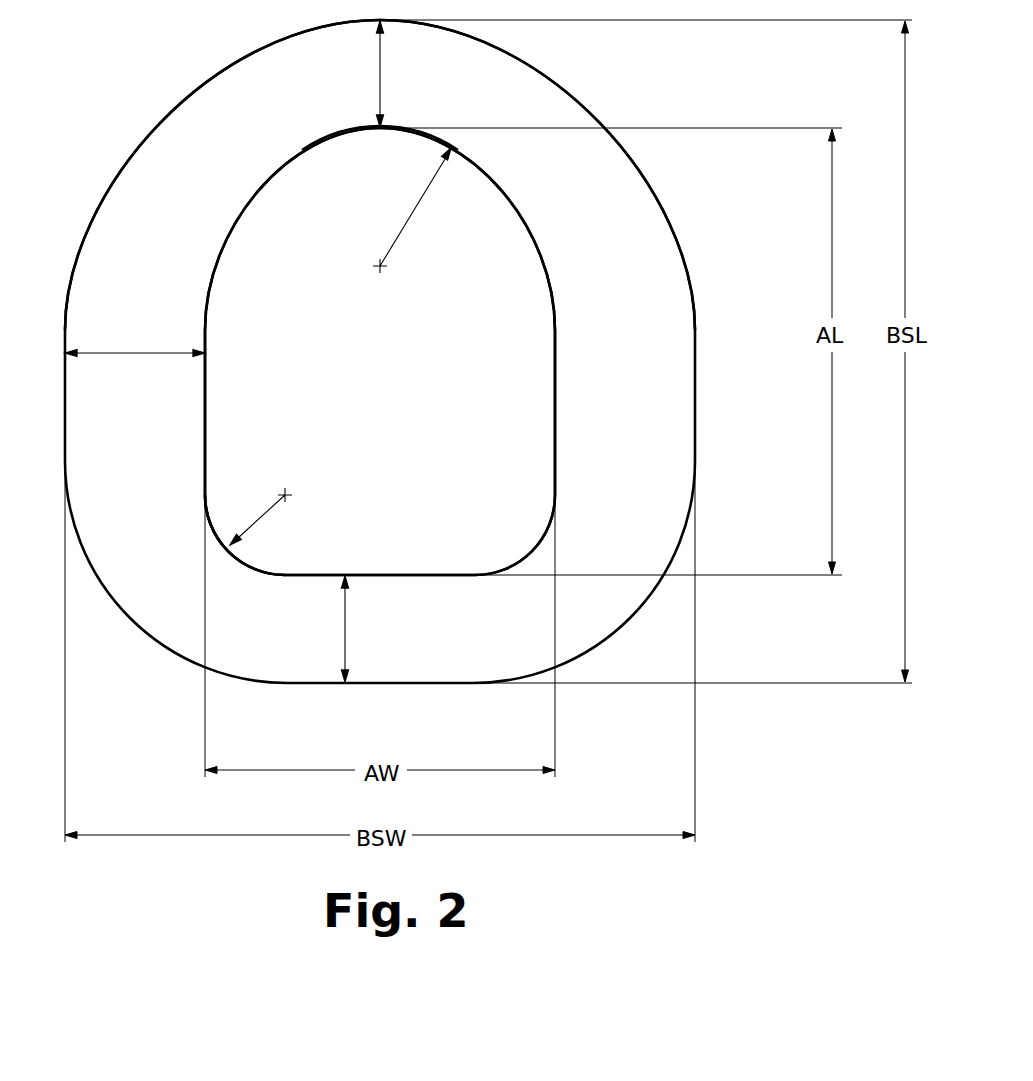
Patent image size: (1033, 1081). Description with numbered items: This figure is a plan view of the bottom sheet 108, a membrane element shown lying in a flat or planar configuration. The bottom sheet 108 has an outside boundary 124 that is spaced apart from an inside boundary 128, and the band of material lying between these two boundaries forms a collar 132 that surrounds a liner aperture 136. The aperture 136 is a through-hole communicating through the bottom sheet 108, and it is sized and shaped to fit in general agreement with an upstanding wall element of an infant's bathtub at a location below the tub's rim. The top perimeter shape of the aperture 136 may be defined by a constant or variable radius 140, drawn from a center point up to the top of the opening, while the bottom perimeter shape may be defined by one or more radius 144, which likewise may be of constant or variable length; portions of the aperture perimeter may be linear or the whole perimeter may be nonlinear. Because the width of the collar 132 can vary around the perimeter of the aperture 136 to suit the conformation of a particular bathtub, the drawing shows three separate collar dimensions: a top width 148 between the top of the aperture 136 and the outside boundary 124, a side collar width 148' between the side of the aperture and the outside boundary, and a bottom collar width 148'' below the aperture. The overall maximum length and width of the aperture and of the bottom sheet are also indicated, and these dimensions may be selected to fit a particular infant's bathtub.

The bottom sheet 108 is at (393, 351).
The outside boundary 124 is at (660, 168).
The inside boundary 128 is at (546, 363).
The collar 132 is at (205, 157).
The liner aperture 136 is at (308, 337).
The radius 140 is at (418, 208).
The radius 144 is at (262, 518).
The top width 148 is at (425, 74).
The side collar width 148' is at (135, 410).
The bottom collar width 148'' is at (414, 629).